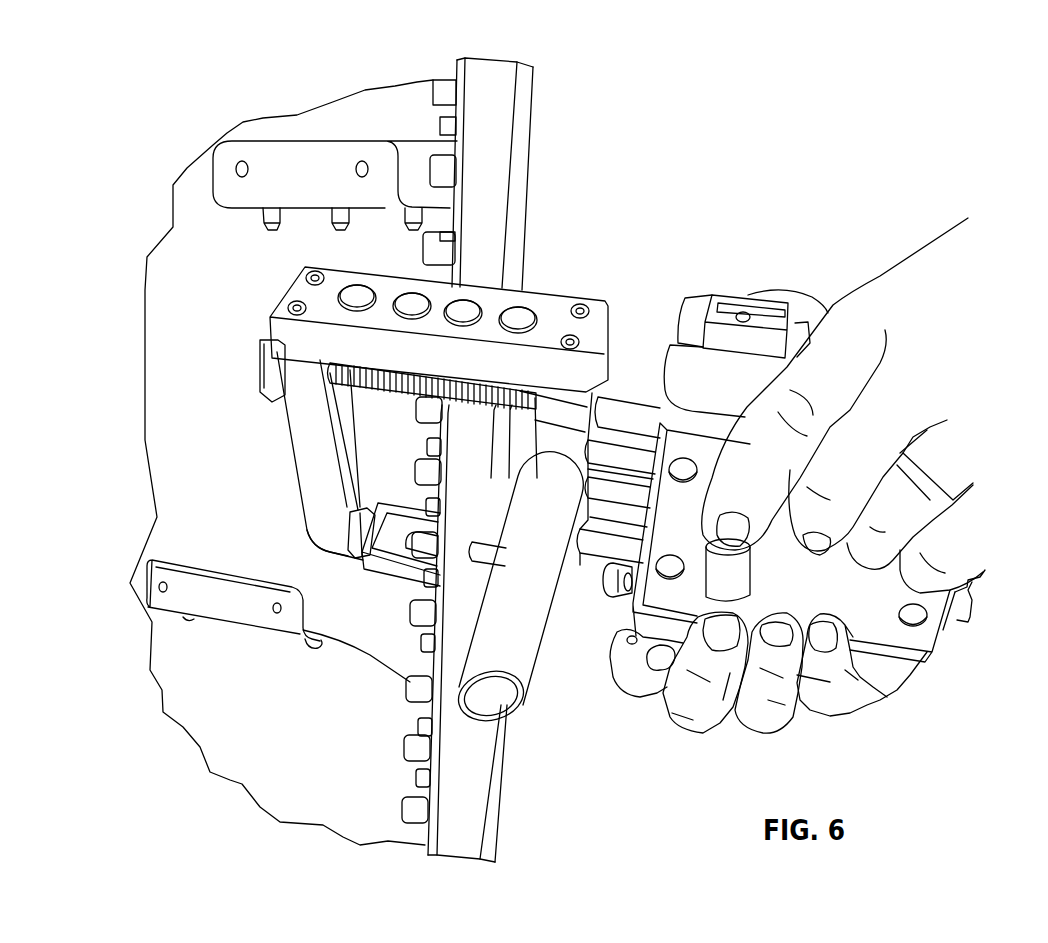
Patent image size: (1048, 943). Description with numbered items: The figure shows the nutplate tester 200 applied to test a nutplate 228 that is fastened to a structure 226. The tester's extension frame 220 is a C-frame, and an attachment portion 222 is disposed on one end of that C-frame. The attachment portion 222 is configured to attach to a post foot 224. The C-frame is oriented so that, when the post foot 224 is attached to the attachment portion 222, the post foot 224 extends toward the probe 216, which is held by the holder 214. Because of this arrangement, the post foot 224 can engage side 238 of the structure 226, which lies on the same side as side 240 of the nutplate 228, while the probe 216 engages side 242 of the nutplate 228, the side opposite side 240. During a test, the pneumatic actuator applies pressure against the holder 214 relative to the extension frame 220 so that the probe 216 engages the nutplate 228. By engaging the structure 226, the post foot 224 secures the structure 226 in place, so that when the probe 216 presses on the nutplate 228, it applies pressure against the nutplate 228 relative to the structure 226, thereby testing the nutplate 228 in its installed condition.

The nutplate tester 200 is at (791, 91).
The holder 214 is at (583, 583).
The probe 216 is at (483, 554).
The extension frame 220 is at (379, 250).
The attachment portion 222 is at (352, 540).
The post foot 224 is at (385, 567).
The structure 226 is at (456, 143).
The nutplate 228 is at (426, 546).
The side of structure 238 is at (296, 654).
The side of nutplate 240 is at (338, 565).
The side of nutplate 242 is at (486, 509).